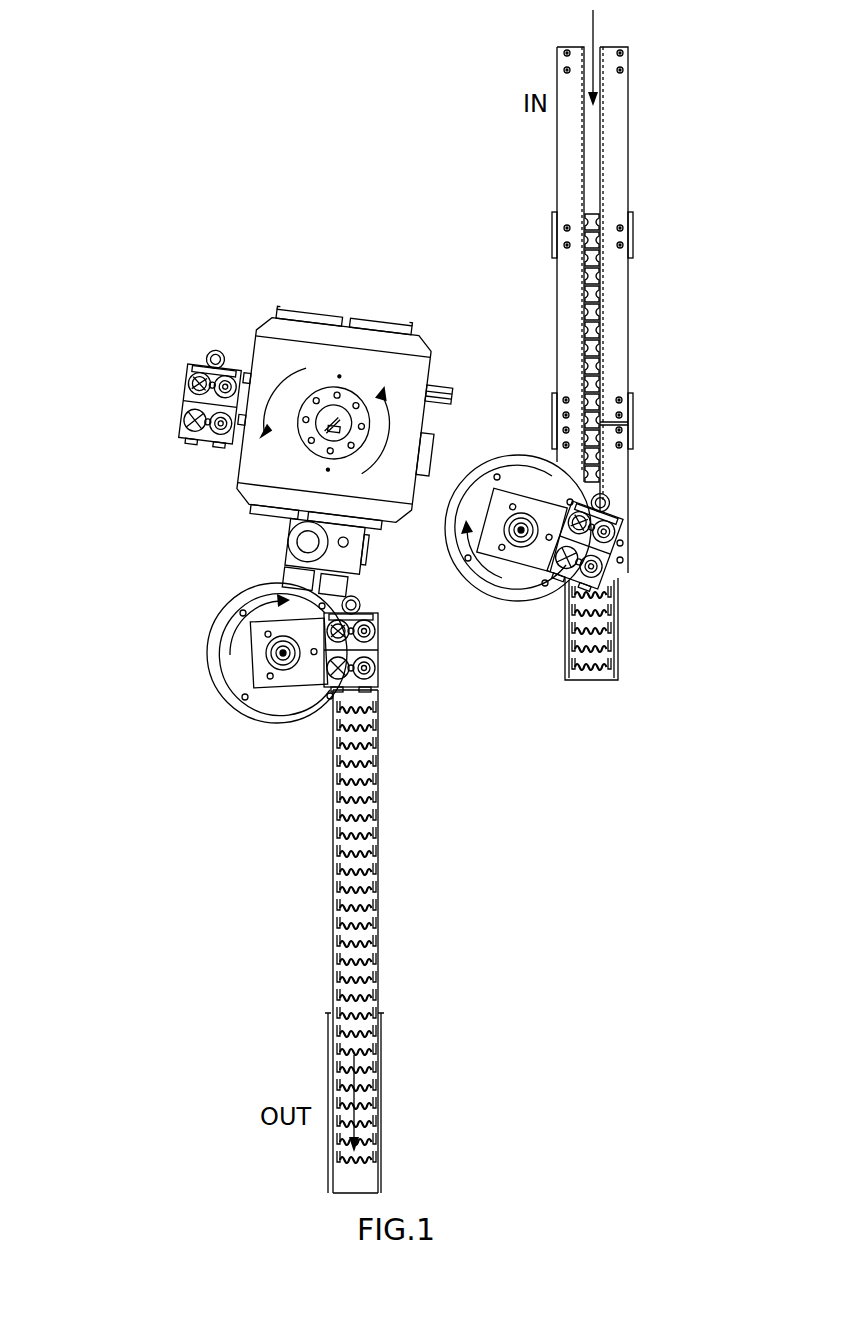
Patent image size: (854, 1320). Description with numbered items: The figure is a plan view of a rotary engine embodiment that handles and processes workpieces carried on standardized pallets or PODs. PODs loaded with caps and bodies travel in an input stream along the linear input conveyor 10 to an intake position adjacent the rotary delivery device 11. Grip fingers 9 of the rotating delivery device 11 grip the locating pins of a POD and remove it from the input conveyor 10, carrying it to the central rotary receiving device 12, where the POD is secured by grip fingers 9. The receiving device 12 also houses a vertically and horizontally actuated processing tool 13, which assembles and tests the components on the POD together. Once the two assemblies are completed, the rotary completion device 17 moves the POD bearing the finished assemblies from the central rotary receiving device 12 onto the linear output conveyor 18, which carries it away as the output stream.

The grip fingers 9 is at (616, 527).
The input conveyor 10 is at (628, 100).
The rotary delivery device 11 is at (530, 578).
The rotary receiving device 12 is at (428, 348).
The processing tool 13 is at (180, 396).
The rotary completion device 17 is at (292, 700).
The output conveyor 18 is at (381, 1112).